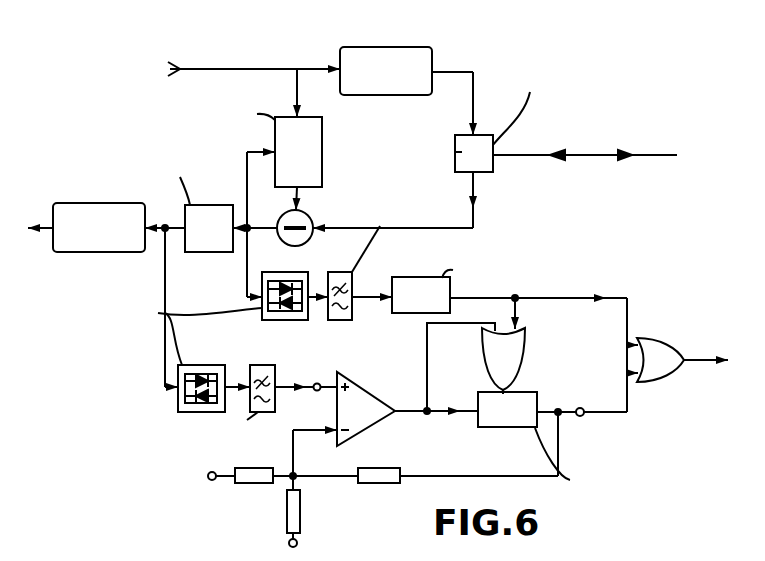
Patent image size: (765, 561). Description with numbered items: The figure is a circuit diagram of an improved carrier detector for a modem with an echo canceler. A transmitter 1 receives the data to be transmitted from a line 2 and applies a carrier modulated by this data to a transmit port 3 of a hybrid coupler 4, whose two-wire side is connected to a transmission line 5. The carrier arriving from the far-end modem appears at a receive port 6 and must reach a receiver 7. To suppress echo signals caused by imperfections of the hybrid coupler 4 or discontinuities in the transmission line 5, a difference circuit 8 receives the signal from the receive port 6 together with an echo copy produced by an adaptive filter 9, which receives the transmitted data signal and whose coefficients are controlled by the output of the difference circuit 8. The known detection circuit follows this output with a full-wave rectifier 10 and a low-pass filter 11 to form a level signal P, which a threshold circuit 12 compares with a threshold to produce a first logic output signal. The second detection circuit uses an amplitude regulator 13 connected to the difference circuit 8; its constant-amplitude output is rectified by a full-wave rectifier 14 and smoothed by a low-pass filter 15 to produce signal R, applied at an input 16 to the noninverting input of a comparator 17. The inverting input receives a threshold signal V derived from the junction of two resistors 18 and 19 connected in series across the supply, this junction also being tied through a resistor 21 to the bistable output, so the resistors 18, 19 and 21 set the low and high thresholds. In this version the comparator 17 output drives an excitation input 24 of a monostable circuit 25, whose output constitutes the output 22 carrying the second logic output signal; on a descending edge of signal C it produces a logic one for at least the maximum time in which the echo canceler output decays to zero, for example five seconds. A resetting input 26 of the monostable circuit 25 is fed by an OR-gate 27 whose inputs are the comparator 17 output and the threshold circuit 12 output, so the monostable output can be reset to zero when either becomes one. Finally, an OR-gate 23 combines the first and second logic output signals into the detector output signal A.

The transmitter 1 is at (413, 55).
The line 2 is at (251, 68).
The transmit port 3 is at (477, 137).
The hybrid coupler 4 is at (455, 153).
The transmission line 5 is at (587, 153).
The receive port 6 is at (477, 173).
The receiver 7 is at (105, 212).
The difference circuit 8 is at (305, 215).
The adaptive filter 9 is at (310, 155).
The full-wave rectifier 10 is at (302, 272).
The low-pass filter 11 is at (341, 272).
The threshold circuit 12 is at (427, 292).
The amplitude regulator 13 is at (216, 216).
The full-wave rectifier 14 is at (213, 365).
The low-pass filter 15 is at (270, 365).
The input 16 is at (320, 383).
The comparator 17 is at (370, 400).
The resistor 18 is at (250, 478).
The resistor 19 is at (300, 510).
The resistor 21 is at (386, 475).
The output 22 is at (580, 417).
The OR-gate 23 is at (653, 350).
The excitation input 24 is at (478, 413).
The monostable circuit 25 is at (513, 418).
The resetting input 26 is at (508, 392).
The OR-gate 27 is at (514, 356).